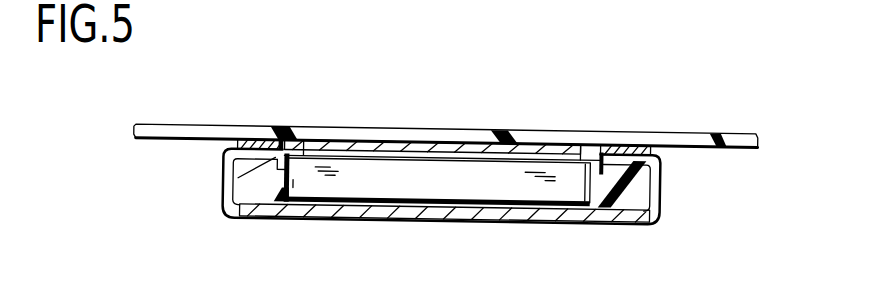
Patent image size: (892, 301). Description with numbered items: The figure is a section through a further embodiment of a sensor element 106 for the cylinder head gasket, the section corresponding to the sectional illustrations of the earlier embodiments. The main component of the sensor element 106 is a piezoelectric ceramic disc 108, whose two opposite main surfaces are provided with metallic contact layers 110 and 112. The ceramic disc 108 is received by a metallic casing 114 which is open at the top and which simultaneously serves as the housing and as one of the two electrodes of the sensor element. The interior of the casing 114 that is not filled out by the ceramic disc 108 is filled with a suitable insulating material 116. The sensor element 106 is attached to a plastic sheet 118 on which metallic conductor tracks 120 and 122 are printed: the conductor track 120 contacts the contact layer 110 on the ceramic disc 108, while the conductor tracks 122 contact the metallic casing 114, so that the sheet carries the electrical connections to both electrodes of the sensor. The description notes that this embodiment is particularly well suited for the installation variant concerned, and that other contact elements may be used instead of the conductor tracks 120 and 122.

The sensor element 106 is at (530, 232).
The piezoelectric ceramic disc 108 is at (330, 191).
The metallic contact layer 110 is at (467, 155).
The metallic contact layer 112 is at (437, 208).
The metallic casing 114 is at (226, 178).
The insulating material 116 is at (643, 188).
The plastic sheet 118 is at (739, 141).
The conductor track 120 is at (364, 146).
The conductor tracks 122 is at (248, 138).